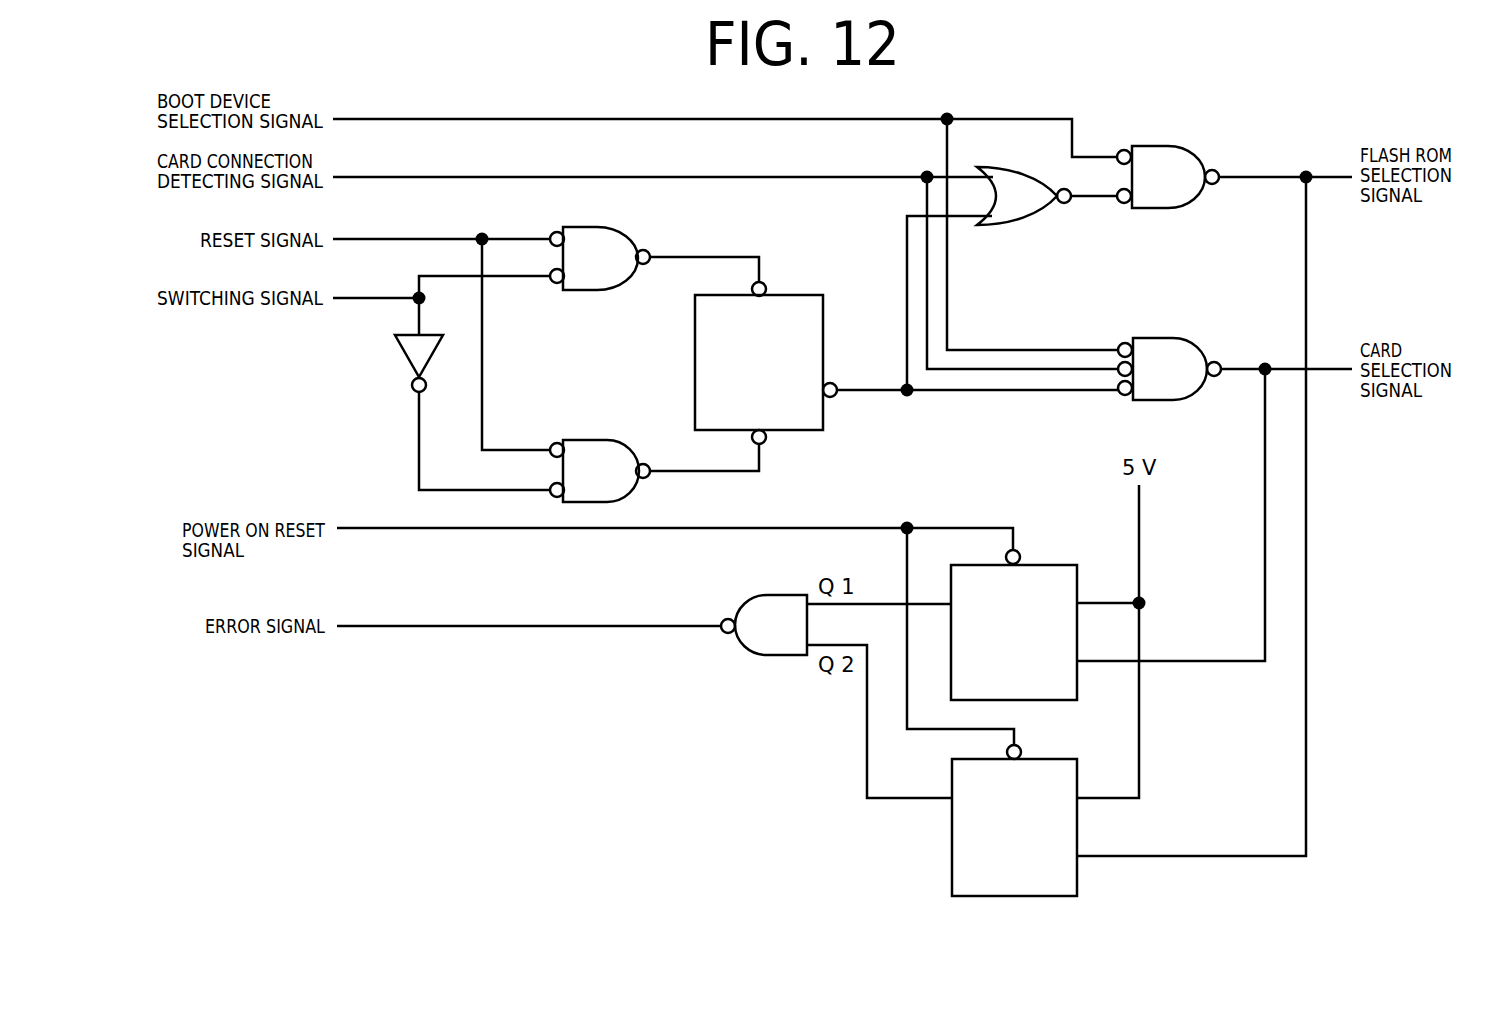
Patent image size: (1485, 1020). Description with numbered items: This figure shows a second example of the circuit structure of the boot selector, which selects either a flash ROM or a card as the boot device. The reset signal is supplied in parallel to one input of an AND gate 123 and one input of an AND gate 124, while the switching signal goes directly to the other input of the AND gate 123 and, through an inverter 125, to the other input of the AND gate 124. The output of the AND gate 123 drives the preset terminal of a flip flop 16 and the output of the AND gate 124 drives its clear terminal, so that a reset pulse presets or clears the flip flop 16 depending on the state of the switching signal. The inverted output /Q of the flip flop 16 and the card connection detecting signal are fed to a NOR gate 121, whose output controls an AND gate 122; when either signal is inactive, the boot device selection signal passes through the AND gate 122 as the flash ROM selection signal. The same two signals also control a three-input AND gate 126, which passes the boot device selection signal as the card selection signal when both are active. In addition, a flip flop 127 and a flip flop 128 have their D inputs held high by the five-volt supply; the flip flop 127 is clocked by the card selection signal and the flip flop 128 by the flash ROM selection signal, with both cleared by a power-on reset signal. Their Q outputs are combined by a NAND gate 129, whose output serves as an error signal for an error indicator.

The flip flop 16 is at (798, 294).
The NOR gate 121 is at (1022, 224).
The AND gate 122 is at (1158, 147).
The AND gate 123 is at (605, 227).
The AND gate 124 is at (590, 440).
The inverter 125 is at (408, 356).
The AND gate 126 is at (1162, 339).
The flip flop 127 is at (1050, 565).
The flip flop 128 is at (952, 872).
The NAND gate 129 is at (762, 656).